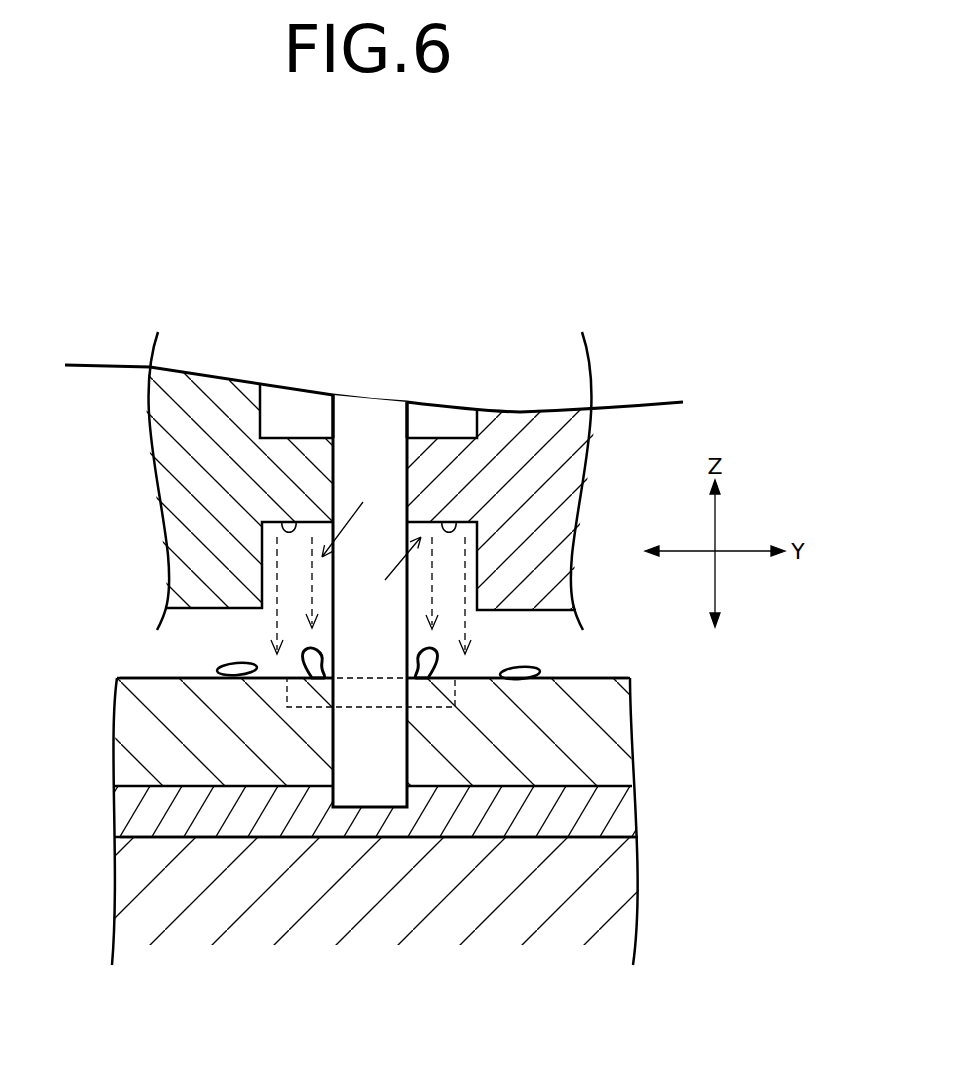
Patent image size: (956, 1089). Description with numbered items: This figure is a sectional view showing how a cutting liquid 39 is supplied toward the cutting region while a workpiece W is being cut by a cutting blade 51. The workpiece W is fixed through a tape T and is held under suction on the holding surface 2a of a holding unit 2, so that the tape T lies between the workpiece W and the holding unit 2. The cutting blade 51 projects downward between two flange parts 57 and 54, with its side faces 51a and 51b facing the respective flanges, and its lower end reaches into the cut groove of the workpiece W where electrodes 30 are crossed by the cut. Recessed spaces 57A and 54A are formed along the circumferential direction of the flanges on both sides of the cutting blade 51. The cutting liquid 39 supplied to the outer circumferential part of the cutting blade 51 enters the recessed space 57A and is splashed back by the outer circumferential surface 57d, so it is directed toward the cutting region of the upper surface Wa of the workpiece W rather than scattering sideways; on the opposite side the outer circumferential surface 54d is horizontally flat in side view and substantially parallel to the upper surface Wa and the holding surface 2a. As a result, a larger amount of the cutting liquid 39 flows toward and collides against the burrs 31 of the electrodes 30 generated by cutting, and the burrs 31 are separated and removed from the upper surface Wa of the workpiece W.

The first cutting water nozzle block 57 is at (207, 385).
The second cutting water nozzle block 54 is at (533, 410).
The cutting blade 51 is at (367, 415).
The first side face of cutting blade 51a is at (333, 398).
The second side face of cutting blade 51b is at (408, 404).
The outer circumferential surface 57d is at (288, 520).
The outer circumferential surface 54d is at (448, 520).
The recessed space 57A is at (359, 516).
The second cutting water flow 54A is at (386, 581).
The cutting liquid 39 is at (277, 622).
The burrs 31 is at (220, 667).
The electrodes 30 is at (437, 707).
The workpiece W is at (687, 733).
The upper surface of the workpiece Wa is at (632, 680).
The tape T is at (687, 807).
The holding unit 2 is at (687, 899).
The holding surface 2a is at (587, 838).